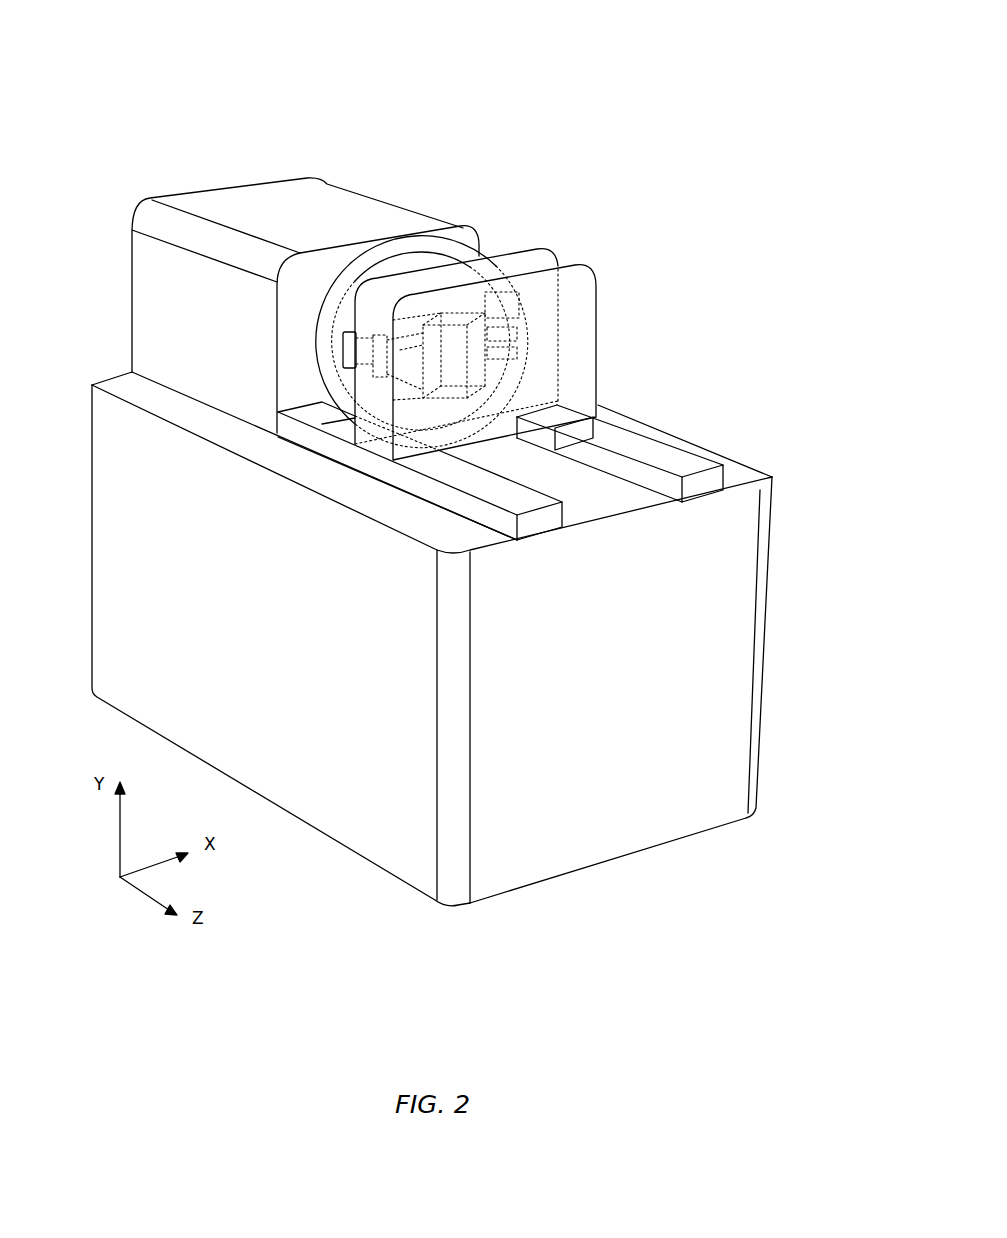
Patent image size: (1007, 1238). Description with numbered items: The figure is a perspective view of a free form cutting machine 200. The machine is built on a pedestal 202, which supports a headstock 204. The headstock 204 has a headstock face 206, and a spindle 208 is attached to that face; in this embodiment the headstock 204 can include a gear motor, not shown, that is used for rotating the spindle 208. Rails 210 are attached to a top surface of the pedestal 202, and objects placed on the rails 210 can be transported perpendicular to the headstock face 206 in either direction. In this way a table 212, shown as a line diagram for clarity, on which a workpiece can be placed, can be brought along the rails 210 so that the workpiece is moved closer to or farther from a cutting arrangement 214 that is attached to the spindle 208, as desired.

The free form cutting machine 200 is at (712, 85).
The pedestal 202 is at (577, 778).
The headstock 204 is at (255, 215).
The headstock face 206 is at (307, 283).
The spindle 208 is at (378, 258).
The rails 210 is at (515, 500).
The table 212 is at (582, 275).
The cutting arrangement 214 is at (492, 266).